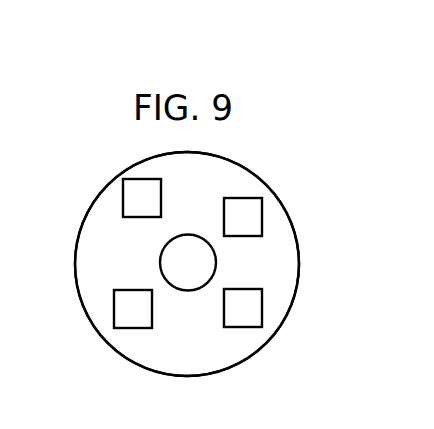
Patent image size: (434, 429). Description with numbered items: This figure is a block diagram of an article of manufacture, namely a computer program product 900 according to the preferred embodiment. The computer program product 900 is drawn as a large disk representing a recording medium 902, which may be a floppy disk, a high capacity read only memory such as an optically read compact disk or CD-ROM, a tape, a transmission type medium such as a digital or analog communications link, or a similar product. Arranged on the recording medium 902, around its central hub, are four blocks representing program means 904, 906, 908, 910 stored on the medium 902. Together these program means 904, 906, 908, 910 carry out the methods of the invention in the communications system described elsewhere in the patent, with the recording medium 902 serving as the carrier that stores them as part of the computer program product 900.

The computer program product 900 is at (254, 152).
The recording medium 902 is at (59, 240).
The program means 904 is at (243, 217).
The program means 906 is at (133, 309).
The program means 908 is at (142, 198).
The program means 910 is at (243, 308).